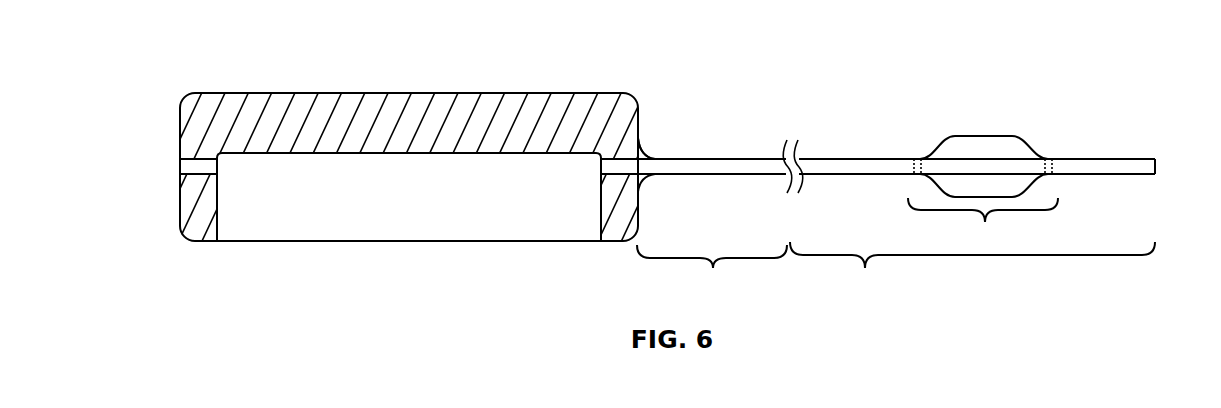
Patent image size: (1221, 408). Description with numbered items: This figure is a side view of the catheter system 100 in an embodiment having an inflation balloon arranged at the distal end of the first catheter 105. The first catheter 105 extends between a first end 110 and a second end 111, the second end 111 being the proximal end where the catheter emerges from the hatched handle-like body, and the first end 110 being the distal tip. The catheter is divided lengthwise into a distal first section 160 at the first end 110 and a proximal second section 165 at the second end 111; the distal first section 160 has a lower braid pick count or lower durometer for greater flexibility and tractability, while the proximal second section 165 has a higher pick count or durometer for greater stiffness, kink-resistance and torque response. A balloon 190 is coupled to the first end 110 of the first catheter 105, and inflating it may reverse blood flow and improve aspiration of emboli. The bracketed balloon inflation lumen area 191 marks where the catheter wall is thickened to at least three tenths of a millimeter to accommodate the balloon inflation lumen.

The catheter system 100 is at (585, 52).
The first catheter 105 is at (885, 159).
The first end 110 is at (1143, 153).
The second end 111 is at (680, 136).
The distal first section 160 is at (972, 270).
The proximal second section 165 is at (712, 272).
The balloon 190 is at (985, 135).
The balloon inflation lumen area 191 is at (983, 225).